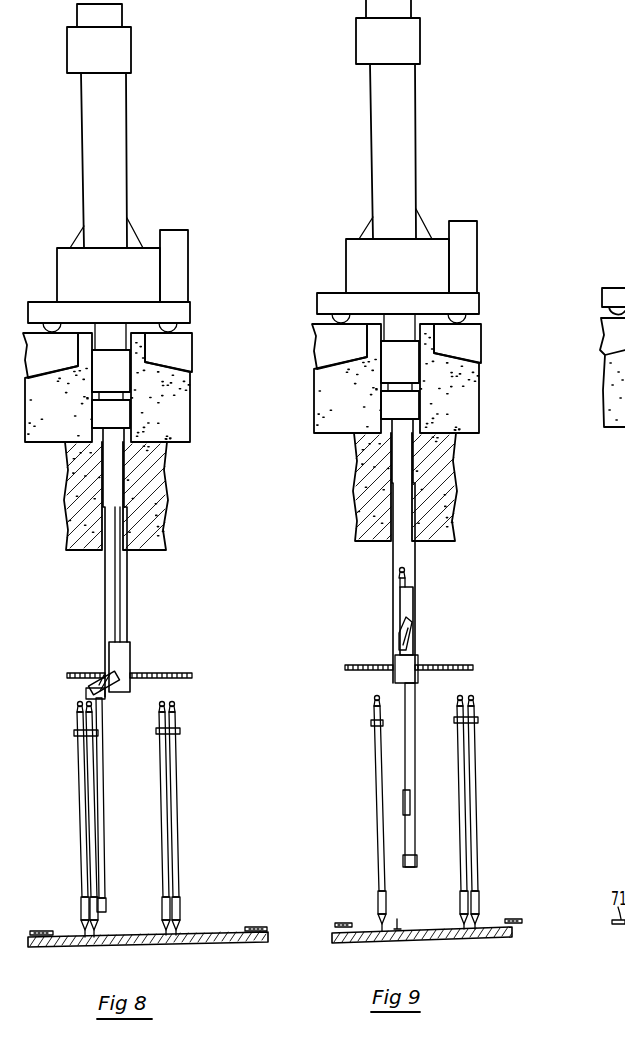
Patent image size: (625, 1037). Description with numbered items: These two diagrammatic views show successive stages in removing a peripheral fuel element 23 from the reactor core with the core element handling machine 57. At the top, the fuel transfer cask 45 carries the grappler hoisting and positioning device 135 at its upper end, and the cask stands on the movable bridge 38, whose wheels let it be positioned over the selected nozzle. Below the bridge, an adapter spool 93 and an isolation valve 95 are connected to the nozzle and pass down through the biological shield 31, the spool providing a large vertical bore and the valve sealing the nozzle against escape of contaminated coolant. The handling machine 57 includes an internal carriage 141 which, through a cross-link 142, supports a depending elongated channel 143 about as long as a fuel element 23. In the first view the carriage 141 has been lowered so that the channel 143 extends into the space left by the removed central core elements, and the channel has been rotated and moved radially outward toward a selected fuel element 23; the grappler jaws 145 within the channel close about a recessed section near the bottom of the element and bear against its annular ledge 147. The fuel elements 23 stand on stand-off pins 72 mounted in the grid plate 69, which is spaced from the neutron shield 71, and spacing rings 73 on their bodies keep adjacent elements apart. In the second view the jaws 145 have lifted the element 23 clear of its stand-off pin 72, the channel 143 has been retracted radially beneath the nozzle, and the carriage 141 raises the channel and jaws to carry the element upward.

In FIG. 8, the grappler hoisting and positioning device 135 is at (131, 36).
In FIG. 9, the grappler hoisting and positioning device 135 is at (411, 41).
In FIG. 8, the fuel transfer cask 45 is at (132, 141).
In FIG. 9, the fuel transfer cask 45 is at (408, 151).
In FIG. 8, the movable bridge 38 is at (190, 343).
In FIG. 9, the movable bridge 38 is at (413, 346).
In FIG. 8, the biological shield 31 is at (181, 398).
In FIG. 9, the biological shield 31 is at (413, 432).
In FIG. 8, the adapter spool 93 is at (122, 382).
In FIG. 9, the adapter spool 93 is at (400, 362).
In FIG. 8, the isolation valve 95 is at (122, 425).
In FIG. 9, the isolation valve 95 is at (400, 405).
In FIG. 8, the core element handling machine 57 is at (120, 622).
In FIG. 8, the internal carriage 141 is at (126, 656).
In FIG. 9, the internal carriage 141 is at (411, 602).
In FIG. 8, the cross-link 142 is at (106, 681).
In FIG. 8, the channel 143 is at (103, 753).
In FIG. 9, the channel 143 is at (417, 739).
In FIG. 8, the spacing ring 73 is at (74, 733).
In FIG. 9, the spacing ring 73 is at (369, 723).
In FIG. 8, the fuel element 23 is at (82, 810).
In FIG. 9, the fuel element 23 is at (378, 795).
In FIG. 8, the annular ledge 147 is at (82, 897).
In FIG. 9, the annular ledge 147 is at (428, 911).
In FIG. 8, the grappler jaws 145 is at (100, 901).
In FIG. 9, the stand-off pin 72 is at (397, 919).
In FIG. 8, the neutron shield 71 is at (40, 930).
In FIG. 9, the neutron shield 71 is at (343, 922).
In FIG. 8, the grid plate 69 is at (228, 935).
In FIG. 9, the grid plate 69 is at (493, 926).